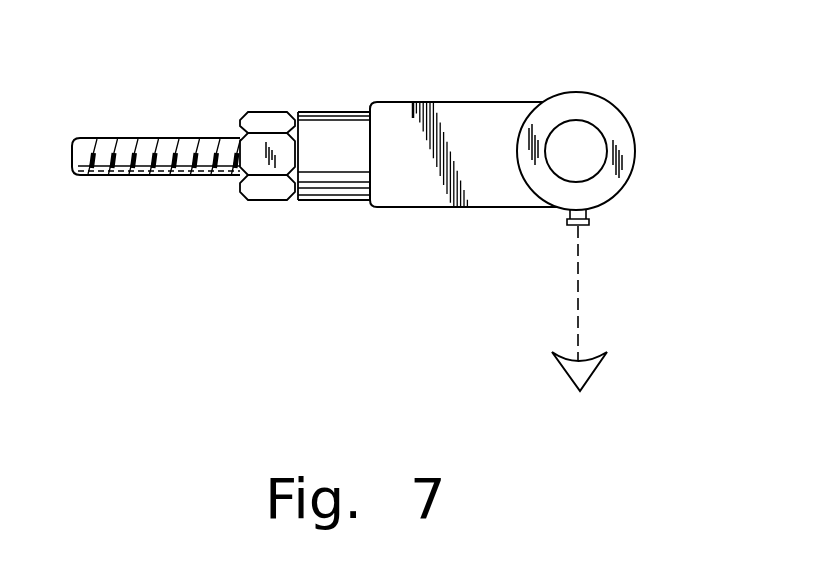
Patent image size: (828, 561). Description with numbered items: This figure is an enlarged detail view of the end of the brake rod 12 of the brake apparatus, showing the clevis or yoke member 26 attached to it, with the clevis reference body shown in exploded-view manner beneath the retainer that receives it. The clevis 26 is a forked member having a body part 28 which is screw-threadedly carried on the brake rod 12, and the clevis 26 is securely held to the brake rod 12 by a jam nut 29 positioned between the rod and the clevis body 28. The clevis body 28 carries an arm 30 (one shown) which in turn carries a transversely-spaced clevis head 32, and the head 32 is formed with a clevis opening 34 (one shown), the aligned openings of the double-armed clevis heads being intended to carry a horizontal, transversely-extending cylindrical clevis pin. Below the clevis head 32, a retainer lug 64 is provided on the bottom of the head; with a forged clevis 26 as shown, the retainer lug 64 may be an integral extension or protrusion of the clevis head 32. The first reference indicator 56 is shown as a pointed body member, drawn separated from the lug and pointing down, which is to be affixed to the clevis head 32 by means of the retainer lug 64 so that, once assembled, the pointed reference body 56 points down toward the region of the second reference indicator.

The brake rod 12 is at (96, 137).
The jam nut 29 is at (252, 113).
The body part 28 is at (318, 125).
The clevis or yoke member 26 is at (463, 124).
The arm 30 is at (450, 107).
The clevis head 32 is at (597, 113).
The clevis opening 34 is at (604, 140).
The retainer lug 64 is at (573, 226).
The first reference indicator 56 is at (586, 378).